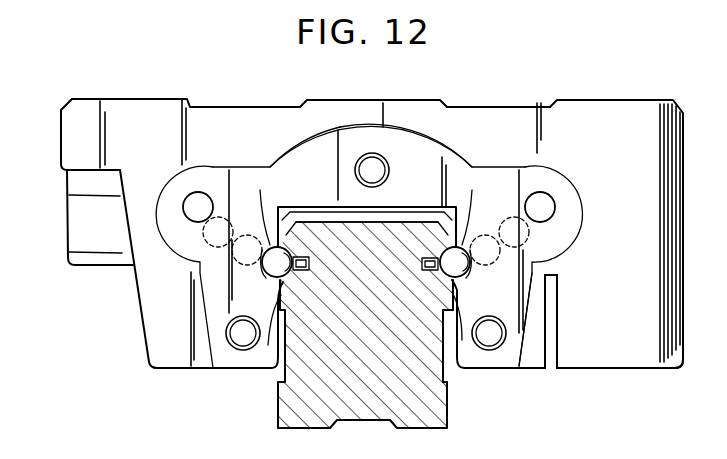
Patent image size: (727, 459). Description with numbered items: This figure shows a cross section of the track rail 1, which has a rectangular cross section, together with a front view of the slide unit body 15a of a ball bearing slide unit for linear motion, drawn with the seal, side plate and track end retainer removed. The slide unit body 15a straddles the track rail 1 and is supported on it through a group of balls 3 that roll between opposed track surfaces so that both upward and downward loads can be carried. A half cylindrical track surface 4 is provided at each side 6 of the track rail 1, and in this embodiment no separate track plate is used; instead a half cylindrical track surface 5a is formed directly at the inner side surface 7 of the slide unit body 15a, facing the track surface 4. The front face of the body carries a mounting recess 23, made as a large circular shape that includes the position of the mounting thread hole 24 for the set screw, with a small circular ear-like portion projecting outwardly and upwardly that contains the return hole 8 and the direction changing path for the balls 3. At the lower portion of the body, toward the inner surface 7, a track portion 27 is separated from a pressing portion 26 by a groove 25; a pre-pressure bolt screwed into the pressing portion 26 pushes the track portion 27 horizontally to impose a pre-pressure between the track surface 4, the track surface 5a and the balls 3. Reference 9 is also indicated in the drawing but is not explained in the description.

The track rail 1 is at (303, 428).
The balls 3 is at (265, 267).
The track surface 4 is at (285, 247).
The track surface 5a is at (271, 248).
The side of track rail 6 is at (268, 345).
The inner side surface 7 is at (278, 383).
The return hole 8 is at (199, 205).
The groove 9 is at (440, 270).
The slide unit body 15a is at (340, 122).
The mounting recess 23 is at (403, 143).
The mounting thread hole 24 is at (373, 152).
The groove 25 is at (548, 362).
The pressing portion 26 is at (632, 353).
The track portion 27 is at (533, 362).